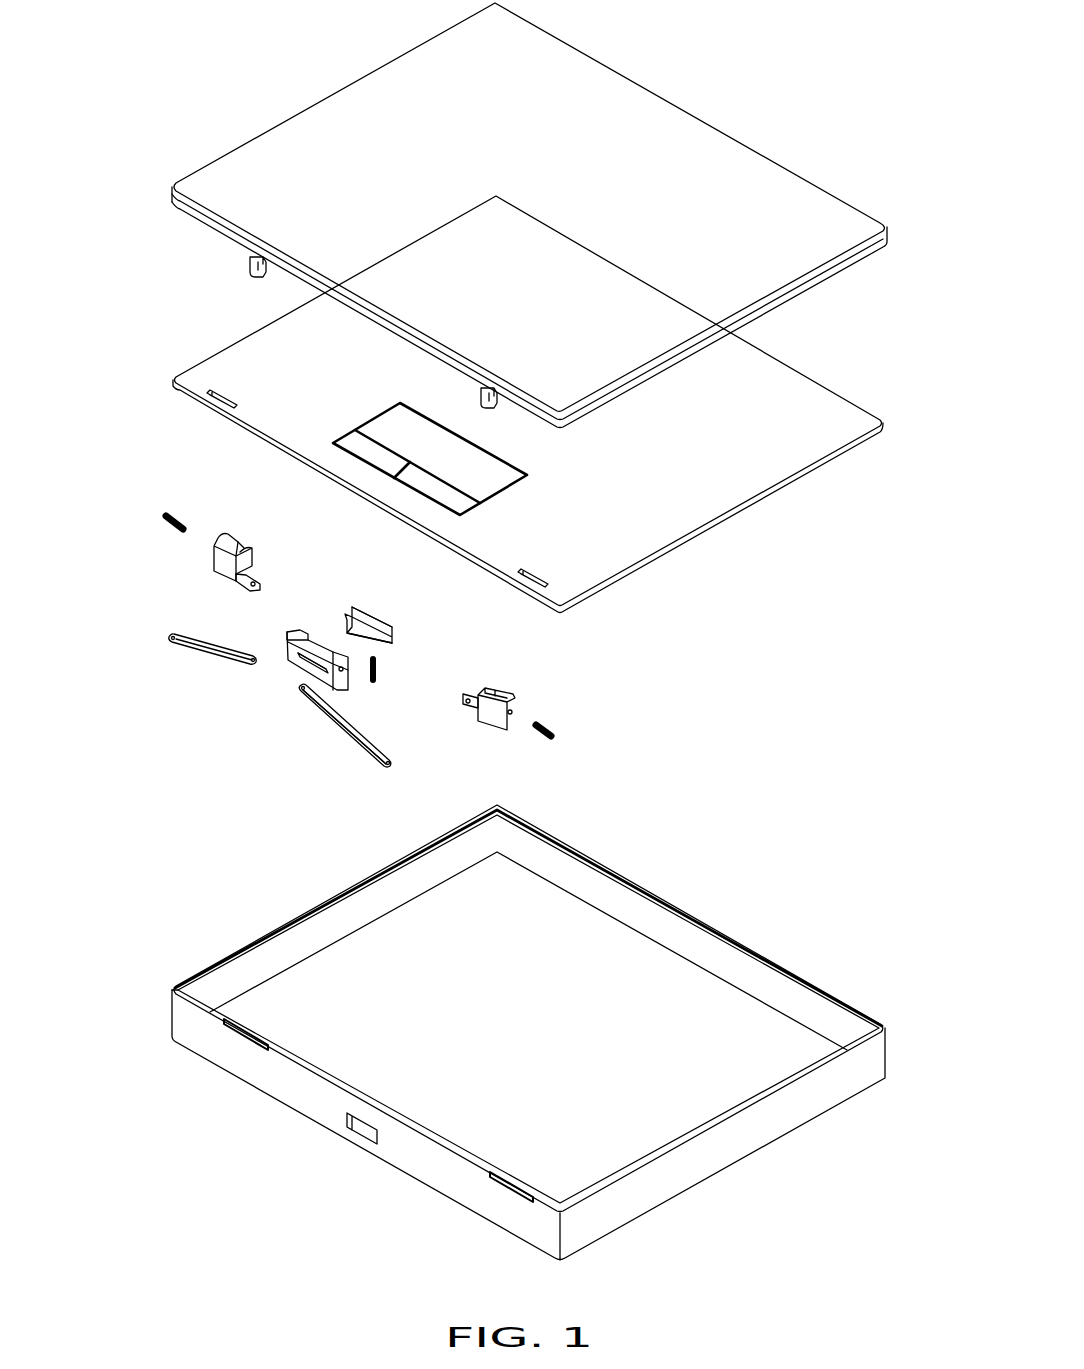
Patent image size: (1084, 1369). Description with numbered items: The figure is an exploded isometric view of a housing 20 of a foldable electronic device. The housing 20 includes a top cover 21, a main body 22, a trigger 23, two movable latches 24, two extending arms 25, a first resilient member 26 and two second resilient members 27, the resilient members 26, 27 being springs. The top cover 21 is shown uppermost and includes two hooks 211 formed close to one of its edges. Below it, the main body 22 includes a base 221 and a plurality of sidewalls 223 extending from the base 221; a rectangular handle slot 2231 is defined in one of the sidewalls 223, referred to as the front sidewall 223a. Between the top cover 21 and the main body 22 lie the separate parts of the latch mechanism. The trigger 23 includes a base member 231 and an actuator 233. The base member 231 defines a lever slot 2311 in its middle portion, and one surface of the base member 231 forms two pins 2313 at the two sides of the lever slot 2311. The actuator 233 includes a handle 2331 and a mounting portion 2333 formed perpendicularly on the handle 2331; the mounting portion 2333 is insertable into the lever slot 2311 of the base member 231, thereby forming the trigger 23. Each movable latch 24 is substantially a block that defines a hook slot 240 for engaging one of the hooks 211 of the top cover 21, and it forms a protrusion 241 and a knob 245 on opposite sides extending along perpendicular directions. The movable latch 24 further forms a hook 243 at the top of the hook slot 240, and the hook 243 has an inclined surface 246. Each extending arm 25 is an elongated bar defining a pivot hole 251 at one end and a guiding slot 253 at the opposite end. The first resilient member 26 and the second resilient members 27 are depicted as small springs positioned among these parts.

The housing 20 is at (660, 37).
The top cover 21 is at (776, 178).
The hook 211 is at (255, 270).
The main body 22 is at (519, 1032).
The base 221 is at (742, 1028).
The sidewall 223 is at (517, 1032).
The front sidewall 223a is at (212, 1012).
The handle slot 2231 is at (362, 1127).
The trigger 23 is at (407, 542).
The base member 231 is at (292, 617).
The lever slot 2311 is at (305, 667).
The pin 2313 is at (287, 637).
The actuator 233 is at (365, 607).
The handle 2331 is at (398, 632).
The mounting portion 2333 is at (376, 620).
The movable latch 24 is at (517, 683).
The hook slot 240 is at (246, 551).
The protrusion 241 is at (240, 589).
The hook 243 is at (213, 547).
The knob 245 is at (513, 714).
The inclined surface 246 is at (233, 546).
The extending arm 25 is at (362, 721).
The pivot hole 251 is at (303, 689).
The guiding slot 253 is at (385, 765).
The first resilient member 26 is at (378, 670).
The second resilient member 27 is at (548, 726).